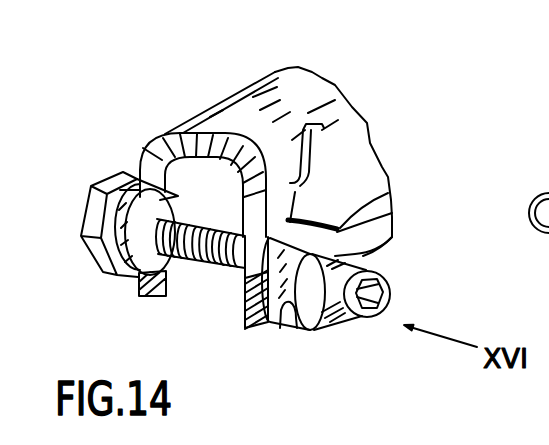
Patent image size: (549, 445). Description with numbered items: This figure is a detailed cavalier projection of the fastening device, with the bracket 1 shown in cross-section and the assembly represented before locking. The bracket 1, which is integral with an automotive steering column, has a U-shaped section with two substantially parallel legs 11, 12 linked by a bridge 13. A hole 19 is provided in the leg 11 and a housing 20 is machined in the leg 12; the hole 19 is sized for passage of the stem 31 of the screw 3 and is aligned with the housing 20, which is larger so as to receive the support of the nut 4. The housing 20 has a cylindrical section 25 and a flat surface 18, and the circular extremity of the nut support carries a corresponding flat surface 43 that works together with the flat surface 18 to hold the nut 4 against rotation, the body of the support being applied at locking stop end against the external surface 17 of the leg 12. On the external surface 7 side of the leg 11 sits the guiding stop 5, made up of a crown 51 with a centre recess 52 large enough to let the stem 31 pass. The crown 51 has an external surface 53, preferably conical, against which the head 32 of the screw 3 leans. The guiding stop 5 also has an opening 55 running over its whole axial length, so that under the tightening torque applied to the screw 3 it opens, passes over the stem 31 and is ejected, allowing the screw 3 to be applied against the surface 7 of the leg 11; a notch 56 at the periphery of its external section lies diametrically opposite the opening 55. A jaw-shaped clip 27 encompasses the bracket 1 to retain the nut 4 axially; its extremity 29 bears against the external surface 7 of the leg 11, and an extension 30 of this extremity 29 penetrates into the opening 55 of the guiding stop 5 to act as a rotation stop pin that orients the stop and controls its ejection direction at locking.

The bracket 1 is at (252, 76).
The screw 3 is at (396, 290).
The nut 4 is at (82, 217).
The guiding stop 5 is at (383, 184).
The external surface 7 is at (271, 330).
The leg 11 is at (250, 326).
The leg 12 is at (146, 296).
The bridge 13 is at (203, 135).
The external surface 17 is at (130, 284).
The flat surface 18 is at (169, 190).
The hole 19 is at (250, 297).
The housing 20 is at (176, 183).
The cylindrical section 25 is at (176, 191).
The clip 27 is at (293, 225).
The extremity 29 is at (285, 175).
The extension 30 is at (297, 228).
The stem 31 is at (233, 283).
The head 32 is at (372, 318).
The flat surface 43 is at (132, 202).
The crown 51 is at (337, 226).
The centre recess 52 is at (362, 258).
The external surface 53 is at (392, 217).
The opening 55 is at (247, 261).
The notch 56 is at (289, 323).